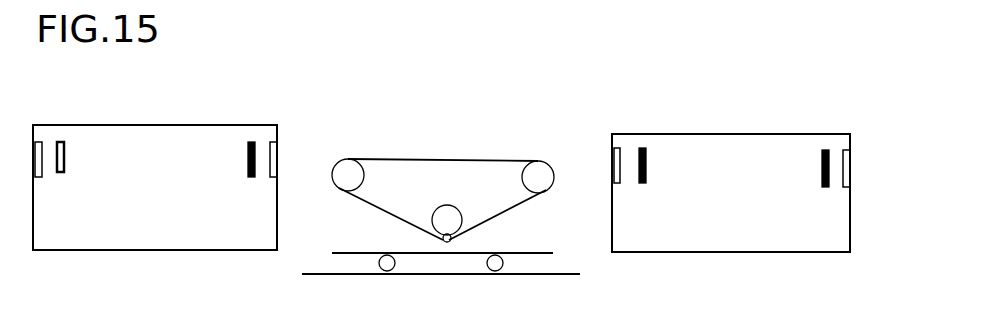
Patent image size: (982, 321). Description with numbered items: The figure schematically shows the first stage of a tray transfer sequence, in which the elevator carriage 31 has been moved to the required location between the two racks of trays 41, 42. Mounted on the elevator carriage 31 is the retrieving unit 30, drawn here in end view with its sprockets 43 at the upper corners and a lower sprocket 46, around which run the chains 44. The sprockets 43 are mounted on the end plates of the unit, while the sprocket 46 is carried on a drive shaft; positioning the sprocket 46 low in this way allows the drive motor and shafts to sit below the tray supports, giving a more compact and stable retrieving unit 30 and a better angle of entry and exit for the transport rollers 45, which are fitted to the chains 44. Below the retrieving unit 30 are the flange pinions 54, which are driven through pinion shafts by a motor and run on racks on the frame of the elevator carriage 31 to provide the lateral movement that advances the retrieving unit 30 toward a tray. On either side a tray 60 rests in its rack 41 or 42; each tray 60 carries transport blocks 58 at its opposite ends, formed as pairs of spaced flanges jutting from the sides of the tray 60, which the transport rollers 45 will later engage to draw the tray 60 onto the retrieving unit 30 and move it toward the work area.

The retrieving unit 30 is at (383, 232).
The elevator carriage 31 is at (482, 277).
The rack of trays 41 is at (153, 110).
The rack of trays 42 is at (719, 121).
The sprockets 43 is at (350, 168).
The chains 44 is at (512, 160).
The transport rollers 45 is at (453, 240).
The sprockets 46 is at (436, 218).
The flange pinions 54 is at (374, 277).
The transport blocks 58 is at (65, 156).
The tray 60 is at (438, 194).